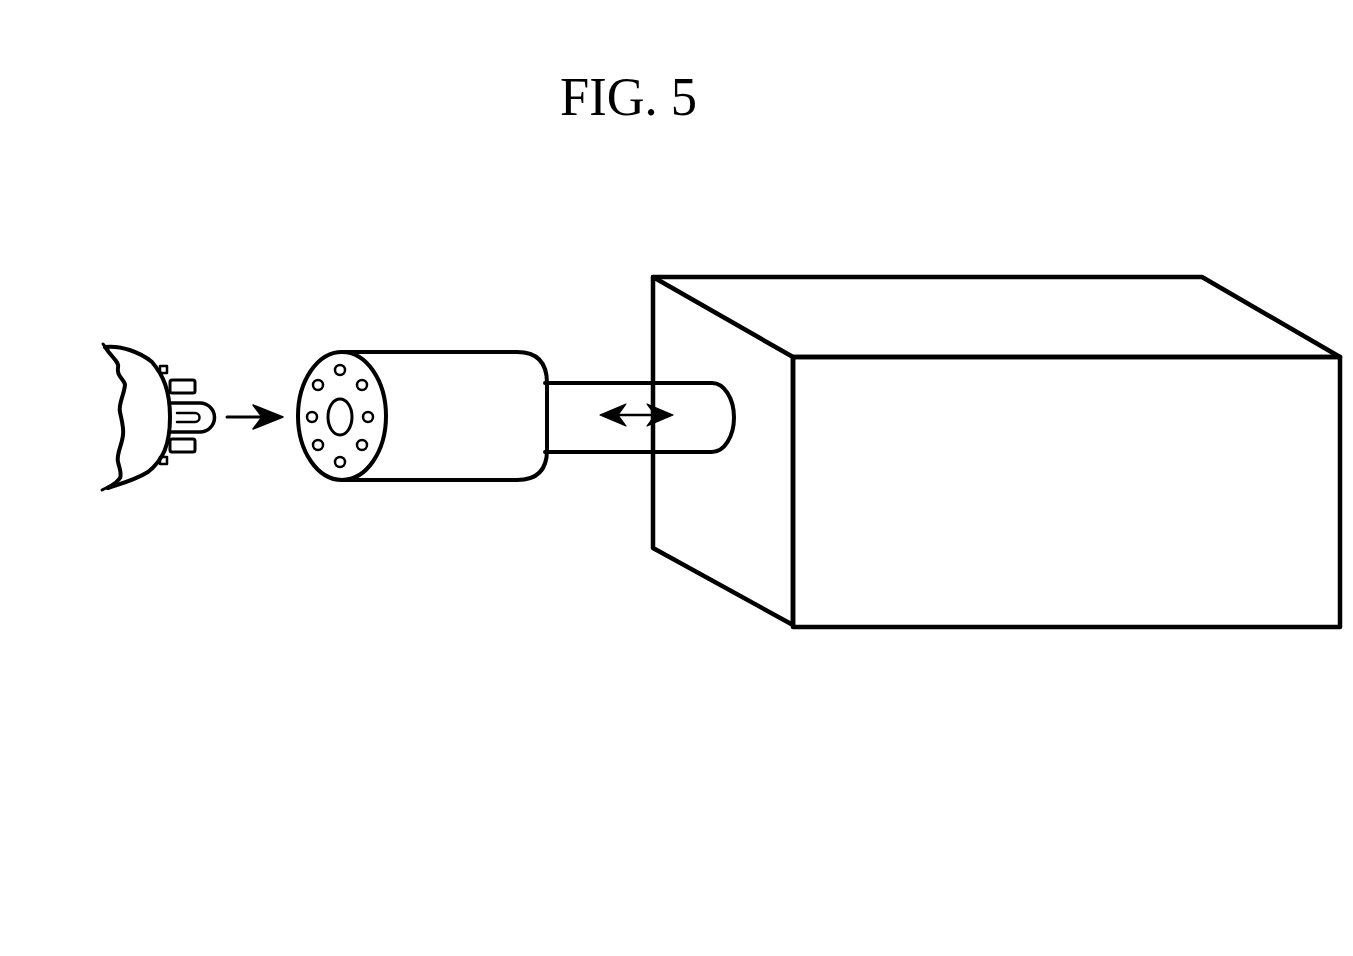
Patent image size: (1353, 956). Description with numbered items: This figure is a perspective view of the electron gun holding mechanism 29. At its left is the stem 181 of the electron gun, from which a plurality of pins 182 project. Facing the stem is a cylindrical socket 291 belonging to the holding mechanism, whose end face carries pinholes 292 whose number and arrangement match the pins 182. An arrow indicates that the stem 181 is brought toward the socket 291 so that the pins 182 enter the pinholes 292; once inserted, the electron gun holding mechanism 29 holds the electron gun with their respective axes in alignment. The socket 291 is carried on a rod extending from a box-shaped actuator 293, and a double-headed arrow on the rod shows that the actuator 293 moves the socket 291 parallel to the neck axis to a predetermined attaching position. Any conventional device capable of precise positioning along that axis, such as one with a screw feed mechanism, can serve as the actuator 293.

The electron gun holding mechanism 29 is at (819, 416).
The stem 181 is at (135, 452).
The pins 182 is at (190, 380).
The socket 291 is at (422, 435).
The pinholes 292 is at (362, 383).
The actuator 293 is at (1055, 583).